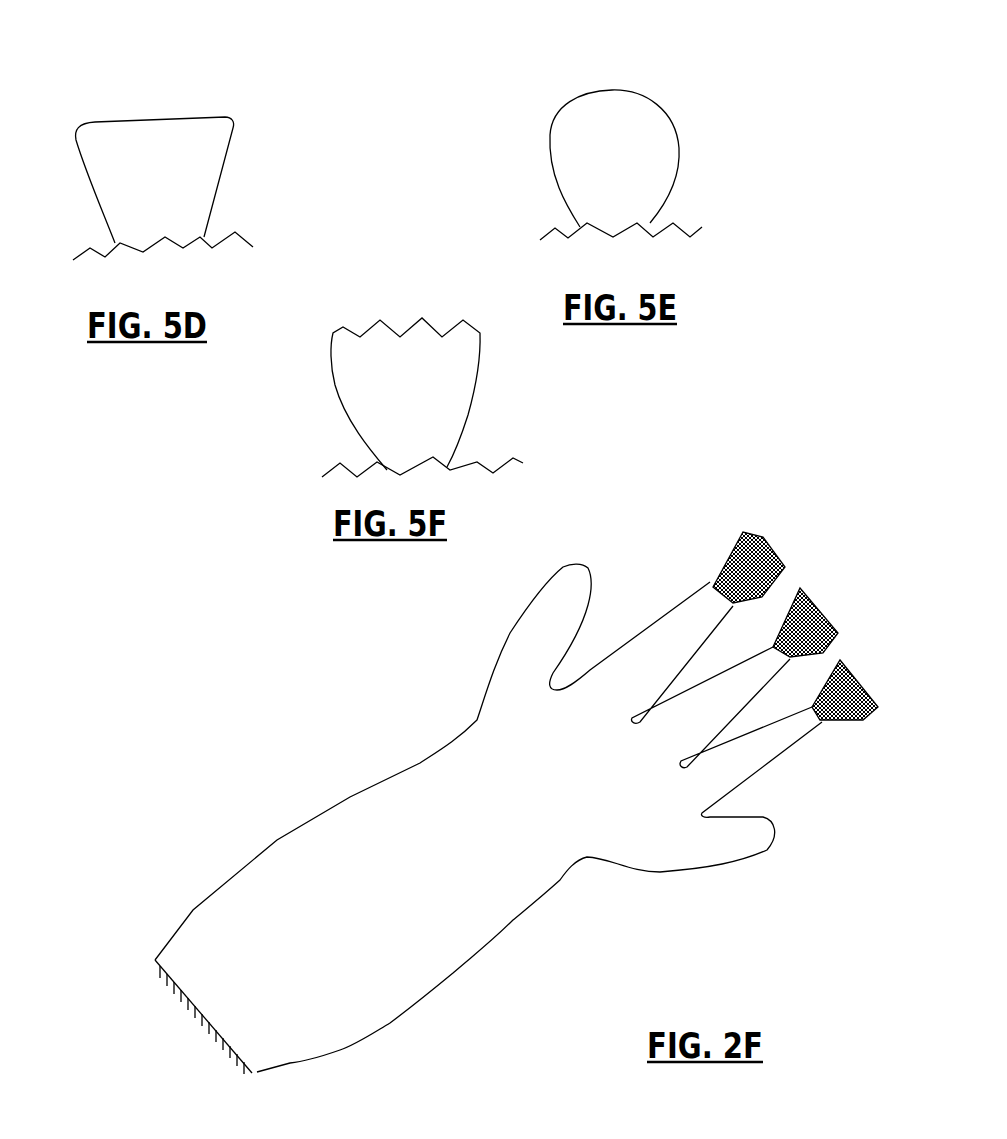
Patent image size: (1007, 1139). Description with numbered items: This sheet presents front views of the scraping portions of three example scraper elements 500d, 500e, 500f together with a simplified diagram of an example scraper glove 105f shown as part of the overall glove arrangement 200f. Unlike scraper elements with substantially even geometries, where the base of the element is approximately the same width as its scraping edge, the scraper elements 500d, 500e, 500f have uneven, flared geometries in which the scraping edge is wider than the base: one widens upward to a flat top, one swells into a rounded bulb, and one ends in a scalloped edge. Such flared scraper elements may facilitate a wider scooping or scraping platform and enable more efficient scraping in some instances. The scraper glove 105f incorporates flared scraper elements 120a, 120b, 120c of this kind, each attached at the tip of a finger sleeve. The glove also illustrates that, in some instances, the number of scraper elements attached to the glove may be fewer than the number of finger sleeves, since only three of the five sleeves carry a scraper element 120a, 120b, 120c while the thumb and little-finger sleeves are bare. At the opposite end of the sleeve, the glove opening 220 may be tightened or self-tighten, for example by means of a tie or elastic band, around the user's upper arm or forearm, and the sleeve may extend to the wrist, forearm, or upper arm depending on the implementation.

In FIG. 5D, the scraper element scraping portion 500d is at (107, 92).
In FIG. 5E, the scraper element scraping portion 500e is at (558, 72).
In FIG. 5F, the scraper element scraping portion 500f is at (307, 428).
In FIG. 2F, the glove assembly 200f is at (524, 788).
In FIG. 2F, the scraper glove 105f is at (332, 778).
In FIG. 2F, the glove opening 220 is at (164, 1021).
In FIG. 2F, the flared scraper element 120a is at (783, 538).
In FIG. 2F, the flared scraper element 120b is at (838, 593).
In FIG. 2F, the flared scraper element 120c is at (876, 665).